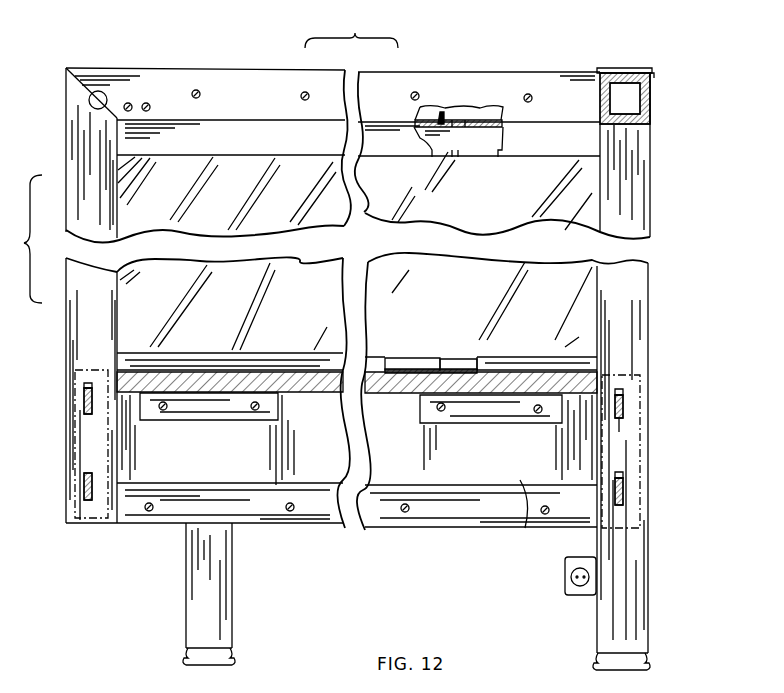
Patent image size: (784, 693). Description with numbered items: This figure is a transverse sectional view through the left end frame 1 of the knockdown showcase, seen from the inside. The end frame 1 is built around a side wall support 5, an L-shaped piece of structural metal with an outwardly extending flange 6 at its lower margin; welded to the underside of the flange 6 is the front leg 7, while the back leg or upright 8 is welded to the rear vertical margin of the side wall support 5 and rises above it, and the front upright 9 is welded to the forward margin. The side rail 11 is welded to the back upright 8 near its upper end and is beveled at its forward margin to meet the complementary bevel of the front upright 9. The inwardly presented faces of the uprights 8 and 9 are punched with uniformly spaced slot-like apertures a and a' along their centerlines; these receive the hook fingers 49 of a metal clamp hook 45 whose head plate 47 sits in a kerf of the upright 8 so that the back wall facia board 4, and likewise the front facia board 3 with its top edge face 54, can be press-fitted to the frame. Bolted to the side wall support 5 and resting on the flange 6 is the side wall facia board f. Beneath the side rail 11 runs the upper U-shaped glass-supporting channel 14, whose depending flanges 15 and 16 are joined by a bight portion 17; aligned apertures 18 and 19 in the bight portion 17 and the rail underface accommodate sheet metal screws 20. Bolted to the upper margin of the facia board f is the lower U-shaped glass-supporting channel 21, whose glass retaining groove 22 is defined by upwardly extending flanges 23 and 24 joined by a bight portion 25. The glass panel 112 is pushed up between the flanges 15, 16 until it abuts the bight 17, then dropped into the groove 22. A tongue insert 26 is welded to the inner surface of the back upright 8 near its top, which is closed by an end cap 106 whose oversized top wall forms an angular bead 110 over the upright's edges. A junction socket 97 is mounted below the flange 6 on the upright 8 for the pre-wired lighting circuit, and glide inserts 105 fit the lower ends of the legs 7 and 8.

The left end frame 1 is at (662, 147).
The front facia board 3 is at (72, 443).
The back wall facia board 4 is at (635, 450).
The side wall support 5 is at (466, 513).
The flange 6 is at (322, 520).
The front leg 7 is at (192, 612).
The back leg or upright 8 is at (632, 354).
The front upright 9 is at (90, 316).
The side rail 11 is at (235, 82).
The upper U-shaped glass-supporting channel 14 is at (277, 132).
The depending flange 15 is at (468, 128).
The depending flange 16 is at (215, 132).
The bight portion 17 is at (488, 123).
The aperture 18 is at (455, 127).
The aperture 19 is at (453, 120).
The sheet metal screw 20 is at (441, 113).
The lower U-shaped glass-supporting channel 21 is at (513, 356).
The glass retaining groove 22 is at (446, 370).
The upwardly extending flange 23 is at (400, 357).
The upwardly extending flange 24 is at (297, 360).
The bight portion 25 is at (436, 370).
The tongue insert 26 is at (632, 103).
The metal clamp hook 45 is at (623, 418).
The head plate 47 is at (622, 432).
The hook finger 49 is at (623, 405).
The top edge face 54 is at (99, 370).
The junction socket 97 is at (575, 597).
The glide insert 105 is at (235, 661).
The end cap 106 is at (618, 68).
The angular bead 110 is at (662, 78).
The glass panel 112 is at (571, 192).
The slot-like aperture a is at (350, 386).
The slot-like aperture a' is at (354, 482).
The side wall facia board f is at (522, 528).